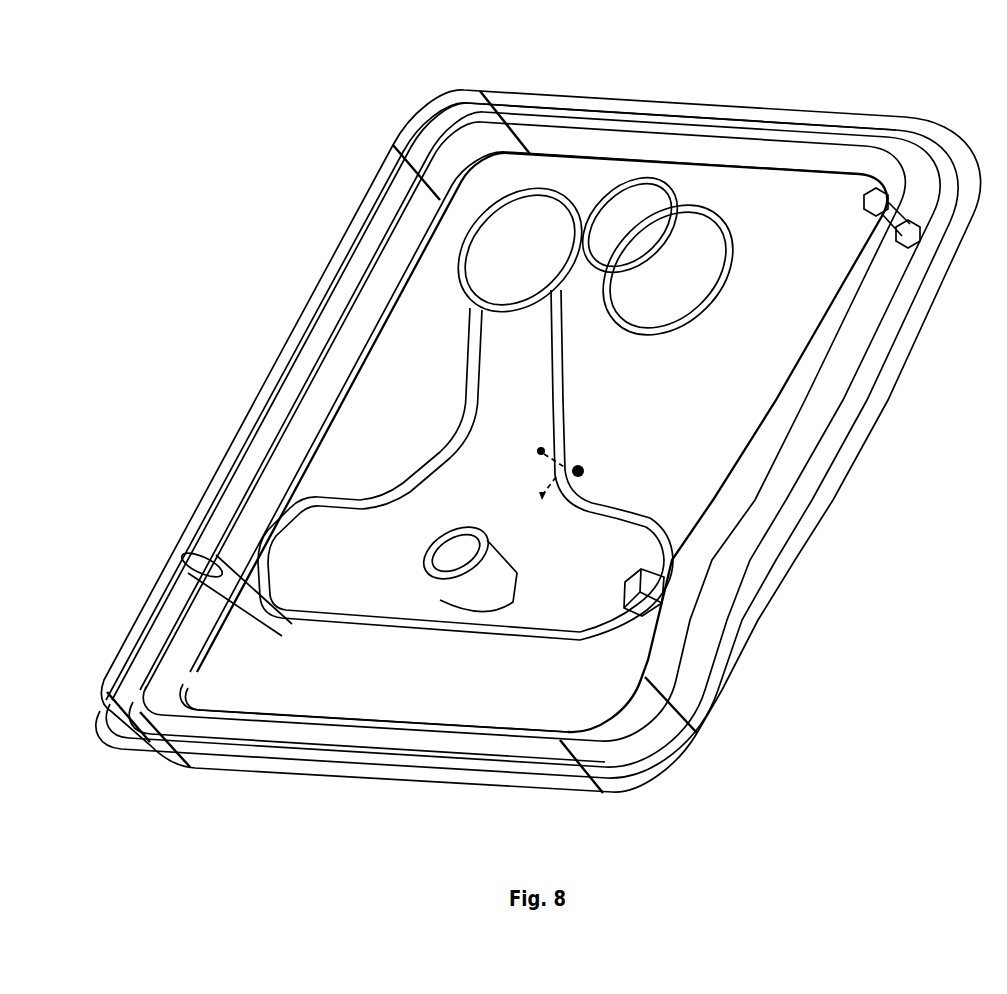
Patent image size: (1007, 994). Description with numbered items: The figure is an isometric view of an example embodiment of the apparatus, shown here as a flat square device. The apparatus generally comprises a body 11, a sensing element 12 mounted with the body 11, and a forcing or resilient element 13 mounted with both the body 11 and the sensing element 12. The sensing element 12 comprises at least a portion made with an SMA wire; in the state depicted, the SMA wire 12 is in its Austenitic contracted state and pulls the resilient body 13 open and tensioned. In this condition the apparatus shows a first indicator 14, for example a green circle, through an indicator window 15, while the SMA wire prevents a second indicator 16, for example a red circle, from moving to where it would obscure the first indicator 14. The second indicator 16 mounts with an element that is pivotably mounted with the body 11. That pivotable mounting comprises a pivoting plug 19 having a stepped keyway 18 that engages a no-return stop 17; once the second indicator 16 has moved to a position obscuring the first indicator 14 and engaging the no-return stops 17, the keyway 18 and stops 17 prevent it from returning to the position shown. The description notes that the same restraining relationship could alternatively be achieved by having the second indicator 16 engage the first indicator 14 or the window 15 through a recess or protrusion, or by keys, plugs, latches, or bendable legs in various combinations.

The body 11 is at (812, 533).
The sensing element 12 is at (743, 453).
The resilient element 13 is at (262, 578).
The first indicator 14 is at (667, 187).
The indicator window 15 is at (741, 223).
The second indicator 16 is at (552, 222).
The no-return stop 17 is at (512, 602).
The stepped keyway 18 is at (453, 530).
The pivoting plug 19 is at (444, 570).